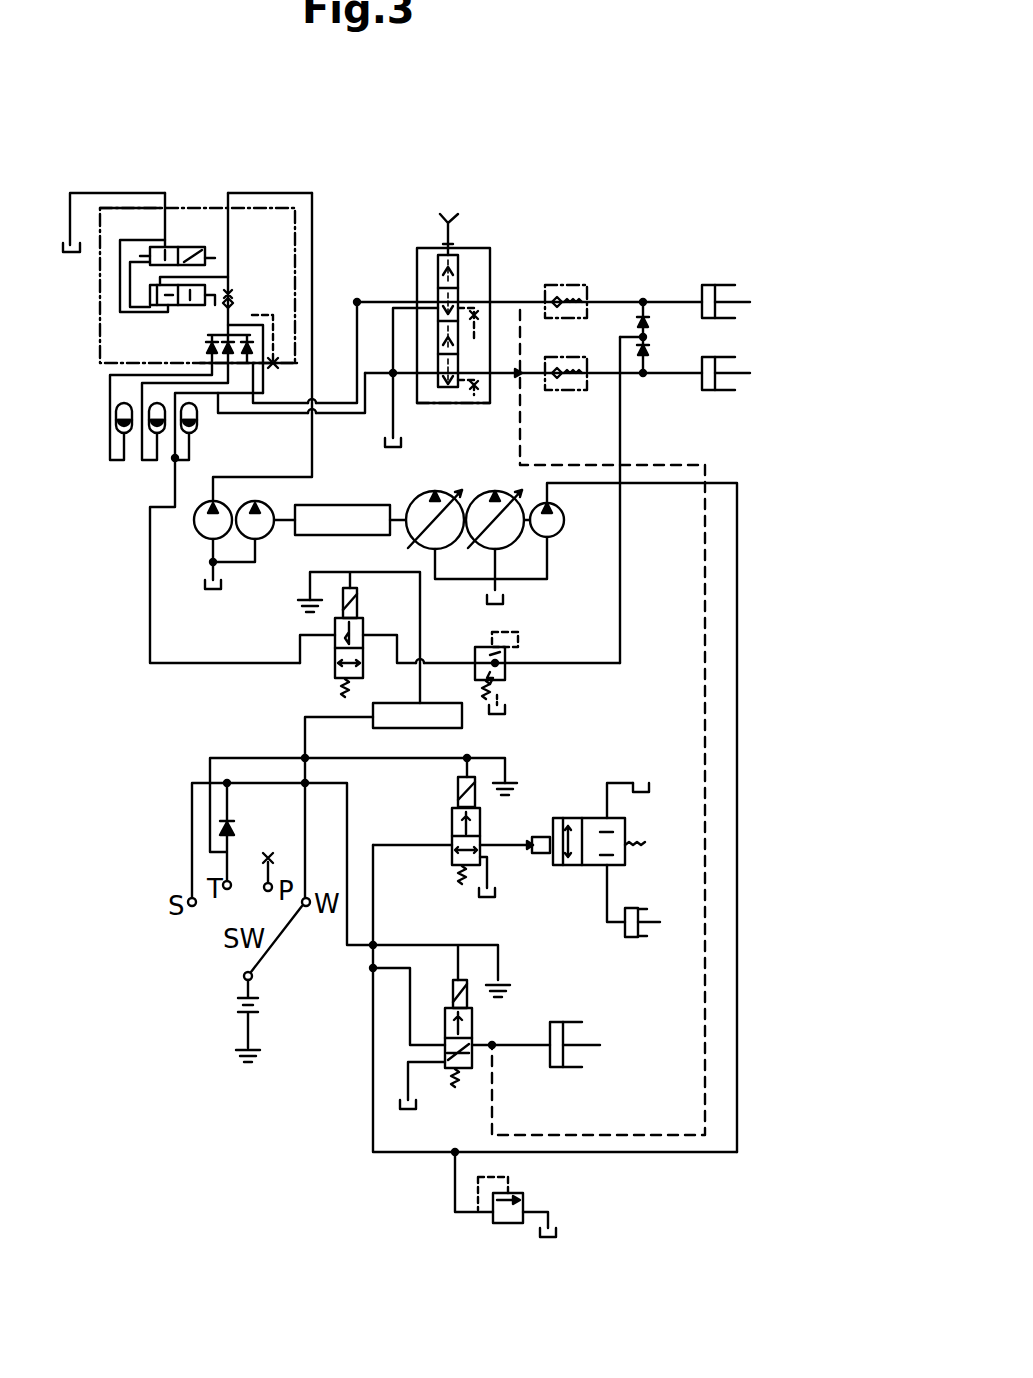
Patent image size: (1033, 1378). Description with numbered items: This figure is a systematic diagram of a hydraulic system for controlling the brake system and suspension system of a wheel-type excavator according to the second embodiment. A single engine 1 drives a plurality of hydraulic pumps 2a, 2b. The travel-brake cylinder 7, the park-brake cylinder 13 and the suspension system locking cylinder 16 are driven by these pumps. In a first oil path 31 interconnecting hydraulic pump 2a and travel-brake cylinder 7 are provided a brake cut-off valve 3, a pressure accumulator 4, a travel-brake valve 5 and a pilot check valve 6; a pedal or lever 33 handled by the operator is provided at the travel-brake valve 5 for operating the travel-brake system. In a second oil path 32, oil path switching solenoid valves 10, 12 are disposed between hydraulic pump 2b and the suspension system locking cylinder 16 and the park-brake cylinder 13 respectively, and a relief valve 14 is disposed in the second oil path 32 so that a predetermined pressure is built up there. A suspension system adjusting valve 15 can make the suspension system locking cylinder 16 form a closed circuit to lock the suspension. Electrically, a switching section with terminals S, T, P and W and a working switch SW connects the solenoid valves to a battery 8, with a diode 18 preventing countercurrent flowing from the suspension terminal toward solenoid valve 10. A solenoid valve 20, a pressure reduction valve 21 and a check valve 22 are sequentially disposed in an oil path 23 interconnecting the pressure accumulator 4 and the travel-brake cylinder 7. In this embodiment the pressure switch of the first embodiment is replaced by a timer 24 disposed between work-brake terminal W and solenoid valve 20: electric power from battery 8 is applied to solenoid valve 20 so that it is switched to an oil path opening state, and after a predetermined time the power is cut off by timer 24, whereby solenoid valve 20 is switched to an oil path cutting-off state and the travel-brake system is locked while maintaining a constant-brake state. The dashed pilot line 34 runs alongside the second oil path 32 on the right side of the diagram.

The engine 1 is at (320, 540).
The hydraulic pump 2a is at (268, 501).
The hydraulic pump 2b is at (565, 532).
The brake cut-off valve 3 is at (150, 207).
The pressure accumulator 4 is at (110, 410).
The travel-brake valve 5 is at (490, 265).
The pilot check valve 6 is at (585, 290).
The travel-brake cylinder 7 is at (723, 283).
The battery 8 is at (245, 1000).
The solenoid valve 10 is at (450, 855).
The solenoid valve 12 is at (447, 1022).
The park-brake cylinder 13 is at (565, 1020).
The relief valve 14 is at (493, 1217).
The suspension system adjusting valve 15 is at (575, 818).
The suspension system locking cylinder 16 is at (630, 937).
The diode 18 is at (218, 826).
The solenoid valve 20 is at (335, 645).
The pressure reduction valve 21 is at (505, 658).
The check valve 22 is at (643, 337).
The oil path 23 is at (150, 590).
The timer 24 is at (462, 718).
The first oil path 31 is at (312, 440).
The second oil path 32 is at (738, 770).
The lever 33 is at (447, 214).
The pilot line 34 is at (705, 882).